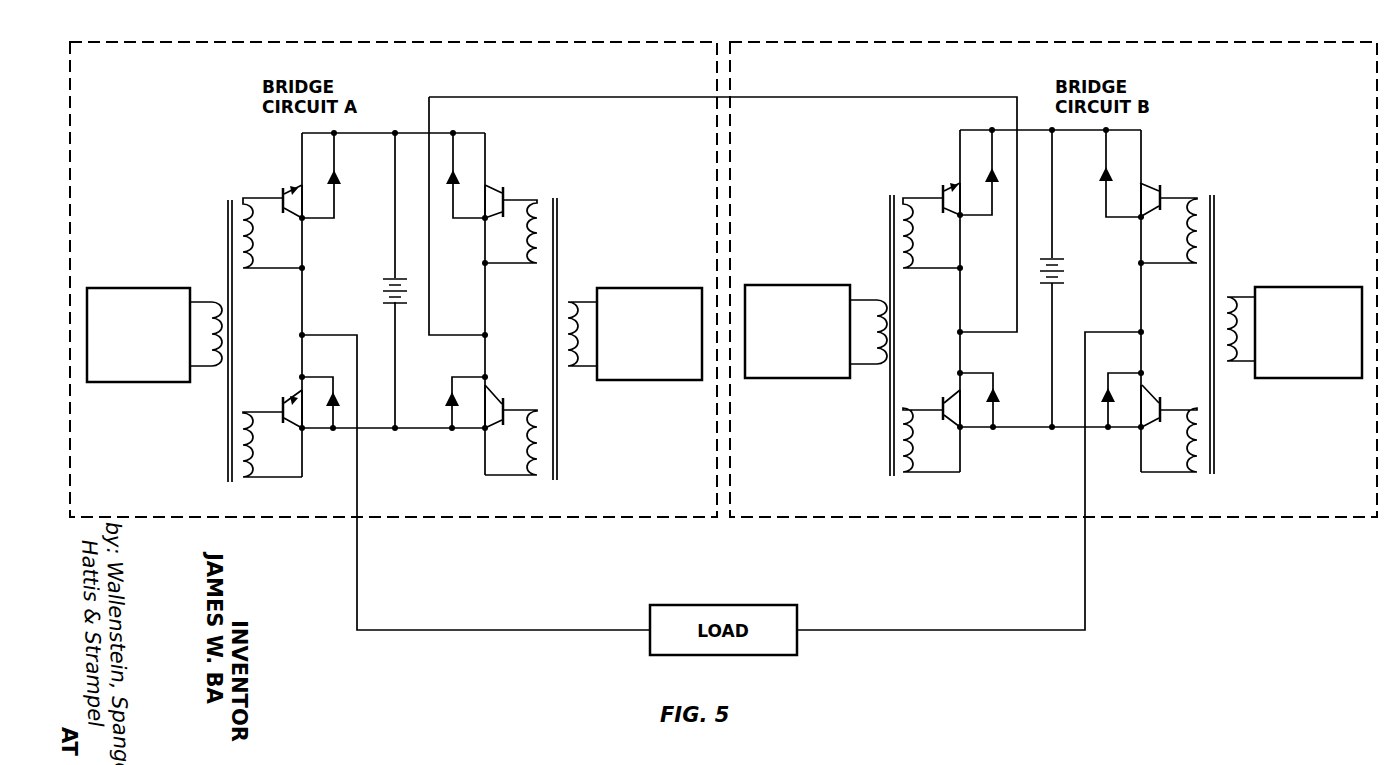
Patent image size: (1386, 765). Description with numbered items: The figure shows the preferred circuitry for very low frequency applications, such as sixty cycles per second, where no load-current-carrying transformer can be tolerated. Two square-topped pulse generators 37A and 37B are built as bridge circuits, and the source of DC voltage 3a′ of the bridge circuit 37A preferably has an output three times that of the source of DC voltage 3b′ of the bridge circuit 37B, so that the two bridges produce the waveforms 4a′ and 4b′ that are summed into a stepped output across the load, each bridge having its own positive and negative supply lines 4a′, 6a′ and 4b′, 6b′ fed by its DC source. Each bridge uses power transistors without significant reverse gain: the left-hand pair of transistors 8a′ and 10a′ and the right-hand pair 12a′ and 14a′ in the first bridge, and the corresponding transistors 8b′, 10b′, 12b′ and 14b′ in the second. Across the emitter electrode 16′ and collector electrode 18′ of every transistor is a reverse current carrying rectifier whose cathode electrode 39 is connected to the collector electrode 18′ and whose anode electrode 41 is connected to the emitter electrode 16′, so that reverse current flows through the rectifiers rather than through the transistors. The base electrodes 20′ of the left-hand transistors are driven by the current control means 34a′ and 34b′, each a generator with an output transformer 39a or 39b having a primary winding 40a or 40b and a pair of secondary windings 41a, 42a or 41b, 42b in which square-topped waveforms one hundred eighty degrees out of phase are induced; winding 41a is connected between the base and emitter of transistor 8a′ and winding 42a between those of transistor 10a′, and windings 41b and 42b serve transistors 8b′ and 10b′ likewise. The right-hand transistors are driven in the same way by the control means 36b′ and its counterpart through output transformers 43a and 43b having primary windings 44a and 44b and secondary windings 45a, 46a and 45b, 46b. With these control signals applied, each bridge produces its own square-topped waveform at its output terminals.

The square-topped pulse generator 37A is at (406, 40).
The square-topped pulse generator 37B is at (1093, 40).
The source of DC voltage 3a′ is at (389, 280).
The source of DC voltage 3b′ is at (1066, 264).
The waveform 4a′ is at (395, 134).
The waveform 4b′ is at (1052, 131).
The negative bus 6a′ is at (393, 430).
The negative bus 6b′ is at (1052, 429).
The transistor 8a′ is at (300, 199).
The transistor 8b′ is at (968, 197).
The transistor 10a′ is at (306, 430).
The transistor 10b′ is at (965, 428).
The transistor 12a′ is at (496, 183).
The transistor 12b′ is at (1150, 180).
The transistor 14a′ is at (492, 392).
The transistor 14b′ is at (1150, 398).
The emitter electrode 16′ is at (292, 214).
The collector electrode 18′ is at (283, 190).
The base electrode 20′ is at (283, 201).
The cathode electrode 39 is at (330, 172).
The anode electrode 41 is at (295, 190).
The current control means 34a′ is at (130, 288).
The current control means 34b′ is at (820, 285).
The control means 36b′ is at (1290, 287).
The output transformer 39a is at (212, 280).
The output transformer 39b is at (870, 280).
The primary winding 40a is at (200, 368).
The primary winding 40b is at (868, 366).
The secondary winding 41a is at (250, 272).
The secondary winding 41b is at (915, 262).
The secondary winding 42a is at (252, 478).
The secondary winding 42b is at (912, 474).
The output transformer 43a is at (575, 270).
The output transformer 43b is at (1232, 275).
The primary winding 44a is at (582, 368).
The primary winding 44b is at (1234, 362).
The secondary winding 45a is at (530, 262).
The secondary winding 45b is at (1192, 262).
The secondary winding 46a is at (530, 475).
The secondary winding 46b is at (1190, 474).